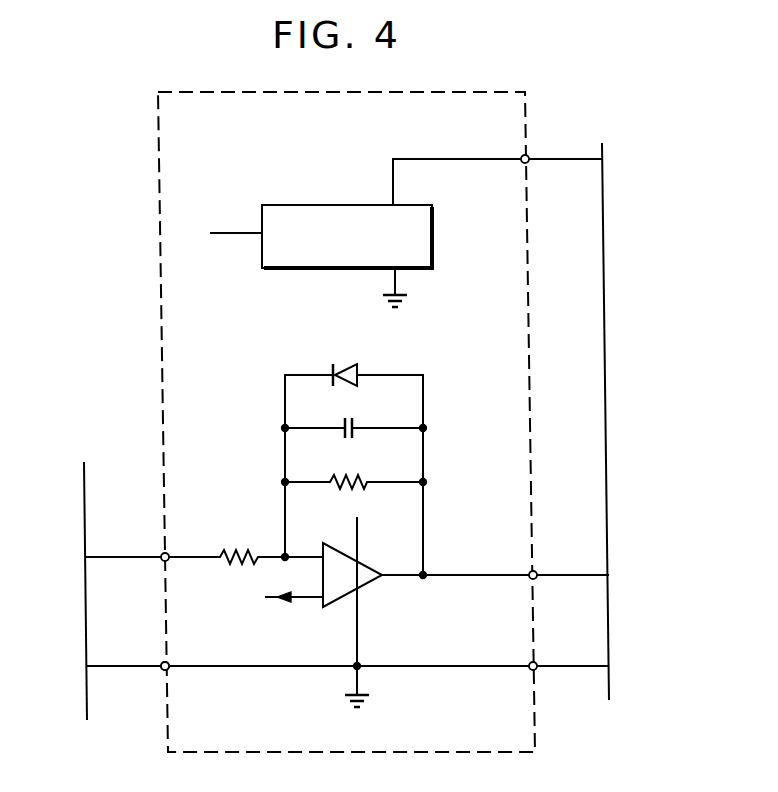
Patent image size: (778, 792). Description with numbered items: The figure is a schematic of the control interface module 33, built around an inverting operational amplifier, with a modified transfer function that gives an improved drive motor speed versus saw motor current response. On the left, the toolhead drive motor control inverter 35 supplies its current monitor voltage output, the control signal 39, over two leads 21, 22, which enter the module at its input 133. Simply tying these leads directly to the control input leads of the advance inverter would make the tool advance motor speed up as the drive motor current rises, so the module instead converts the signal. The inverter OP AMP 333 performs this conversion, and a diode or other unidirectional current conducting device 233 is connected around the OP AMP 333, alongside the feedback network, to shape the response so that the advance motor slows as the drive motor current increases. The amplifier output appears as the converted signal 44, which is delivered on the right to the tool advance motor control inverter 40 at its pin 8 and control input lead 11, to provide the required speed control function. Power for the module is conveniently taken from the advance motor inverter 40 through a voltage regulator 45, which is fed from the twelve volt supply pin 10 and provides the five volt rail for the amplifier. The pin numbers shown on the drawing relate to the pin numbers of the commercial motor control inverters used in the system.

The voltage regulator 45 is at (335, 205).
The +12V supply line 10 is at (564, 168).
The unidirectional current conducting device 233 is at (350, 366).
The lead 21 is at (185, 548).
The lead 22 is at (289, 667).
The motor control inverter 35 is at (45, 631).
The control signal 39 is at (131, 631).
The input 133 is at (170, 642).
The control interface module 33 is at (348, 609).
The inverter OP AMP 333 is at (369, 582).
The output terminal 8 is at (531, 562).
The control input lead 11 is at (589, 664).
The signal 44 is at (572, 631).
The motor control inverter 40 is at (656, 631).